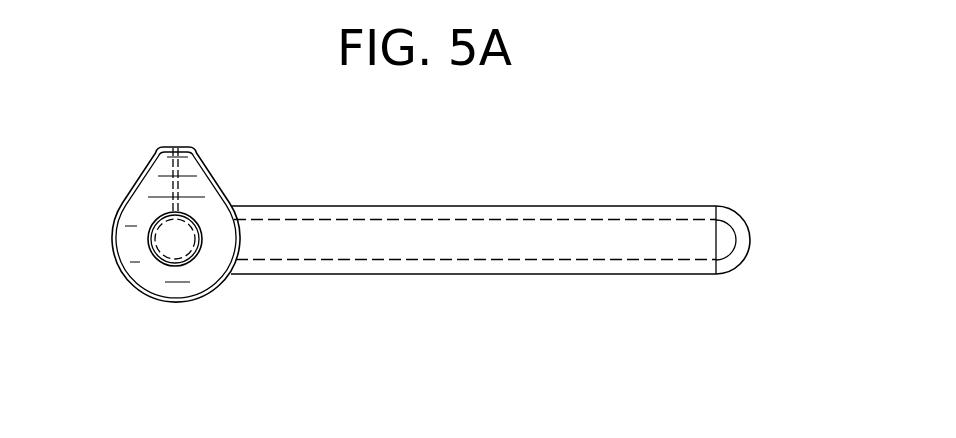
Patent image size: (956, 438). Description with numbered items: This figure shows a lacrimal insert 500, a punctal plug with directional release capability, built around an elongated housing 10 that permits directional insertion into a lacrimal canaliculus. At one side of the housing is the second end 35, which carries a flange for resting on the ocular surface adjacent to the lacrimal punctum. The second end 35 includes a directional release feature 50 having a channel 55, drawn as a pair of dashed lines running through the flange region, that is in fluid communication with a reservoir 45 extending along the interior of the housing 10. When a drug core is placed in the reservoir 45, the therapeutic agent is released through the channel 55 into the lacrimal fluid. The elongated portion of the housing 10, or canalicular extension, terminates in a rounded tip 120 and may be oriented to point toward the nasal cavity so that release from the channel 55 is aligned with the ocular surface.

The lacrimal insert 500 is at (446, 156).
The elongated housing 10 is at (348, 268).
The reservoir 45 is at (466, 244).
The rounded end cap 120 is at (724, 236).
The directional release feature 50 is at (152, 187).
The channel 55 is at (175, 148).
The second end 35 is at (133, 255).